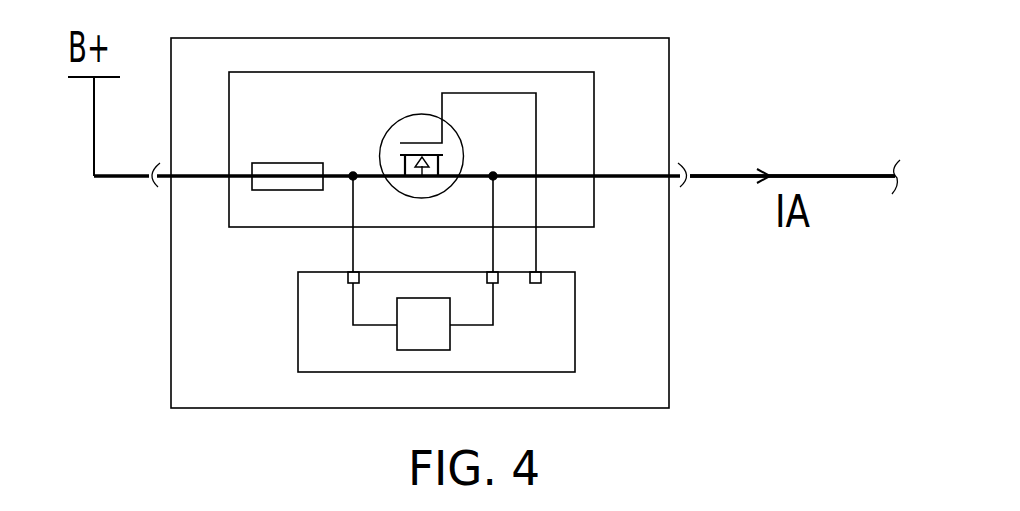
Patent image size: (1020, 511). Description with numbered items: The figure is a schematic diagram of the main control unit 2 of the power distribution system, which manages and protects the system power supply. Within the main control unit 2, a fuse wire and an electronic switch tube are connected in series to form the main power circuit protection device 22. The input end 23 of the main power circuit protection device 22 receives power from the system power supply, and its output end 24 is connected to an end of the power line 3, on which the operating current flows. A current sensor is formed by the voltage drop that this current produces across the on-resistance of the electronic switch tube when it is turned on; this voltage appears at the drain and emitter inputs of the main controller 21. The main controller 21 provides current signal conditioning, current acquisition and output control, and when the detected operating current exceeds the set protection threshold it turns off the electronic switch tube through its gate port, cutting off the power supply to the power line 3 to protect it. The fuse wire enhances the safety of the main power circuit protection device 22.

The main control unit 2 is at (170, 357).
The power line 3 is at (845, 172).
The main controller 21 is at (557, 323).
The main power circuit protection device 22 is at (583, 128).
The input end 23 is at (152, 186).
The output end 24 is at (683, 187).